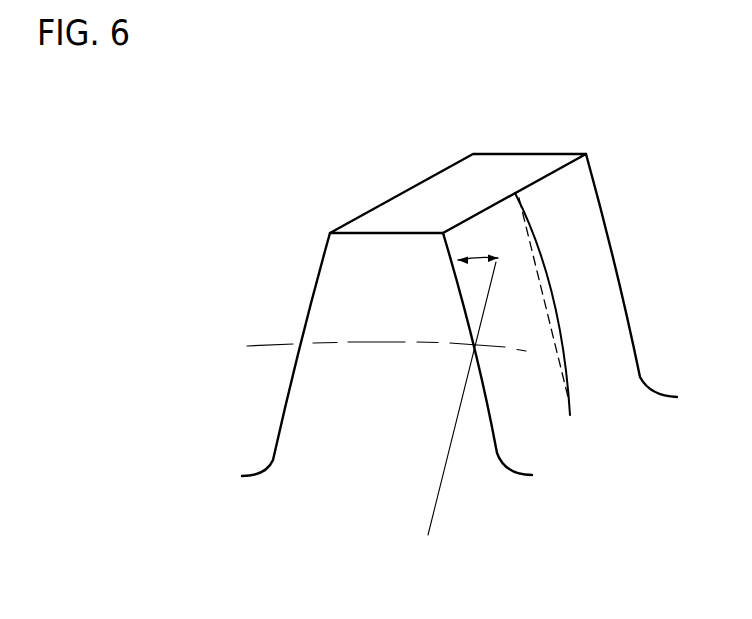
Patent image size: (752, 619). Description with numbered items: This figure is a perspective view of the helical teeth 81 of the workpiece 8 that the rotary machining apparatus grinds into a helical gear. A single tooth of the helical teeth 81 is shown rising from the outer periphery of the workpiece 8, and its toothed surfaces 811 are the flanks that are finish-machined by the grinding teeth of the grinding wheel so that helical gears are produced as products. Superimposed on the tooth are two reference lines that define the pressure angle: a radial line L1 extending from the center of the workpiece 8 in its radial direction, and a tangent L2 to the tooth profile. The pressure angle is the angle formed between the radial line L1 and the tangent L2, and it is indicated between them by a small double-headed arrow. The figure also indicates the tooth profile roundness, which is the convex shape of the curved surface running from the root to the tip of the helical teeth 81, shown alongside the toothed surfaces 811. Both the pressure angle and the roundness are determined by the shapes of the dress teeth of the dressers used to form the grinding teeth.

The workpiece 8 is at (348, 488).
The helical teeth 81 is at (347, 298).
The toothed surfaces 811 is at (532, 388).
The radial line L1 is at (490, 293).
The tangent to the tooth profile L2 is at (452, 270).